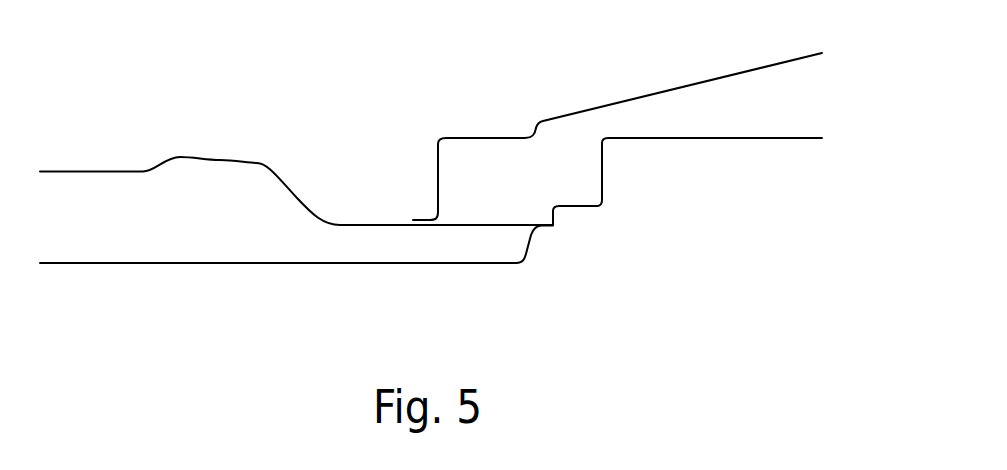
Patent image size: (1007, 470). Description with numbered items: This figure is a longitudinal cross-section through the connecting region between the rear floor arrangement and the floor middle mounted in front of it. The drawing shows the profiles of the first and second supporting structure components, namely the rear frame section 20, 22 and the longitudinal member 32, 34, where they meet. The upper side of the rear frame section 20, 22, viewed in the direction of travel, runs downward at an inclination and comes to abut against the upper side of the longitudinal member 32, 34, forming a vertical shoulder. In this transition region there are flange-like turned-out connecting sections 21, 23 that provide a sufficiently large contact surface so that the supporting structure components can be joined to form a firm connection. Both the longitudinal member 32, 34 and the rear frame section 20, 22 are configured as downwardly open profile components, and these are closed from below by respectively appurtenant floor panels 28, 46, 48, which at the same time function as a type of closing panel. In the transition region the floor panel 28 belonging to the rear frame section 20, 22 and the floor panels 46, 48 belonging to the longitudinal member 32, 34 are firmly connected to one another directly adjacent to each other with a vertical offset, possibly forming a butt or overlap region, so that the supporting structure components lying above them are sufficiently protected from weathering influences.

The rear frame section 20 is at (679, 68).
The rear frame section 22 is at (693, 95).
The flange-like turned-out connecting section 21 is at (423, 218).
The flange-like turned-out connecting section 23 is at (557, 220).
The floor panel 28 is at (750, 139).
The longitudinal member 32 is at (293, 155).
The longitudinal member 34 is at (105, 171).
The floor panel 46 is at (296, 291).
The floor panel 48 is at (256, 265).